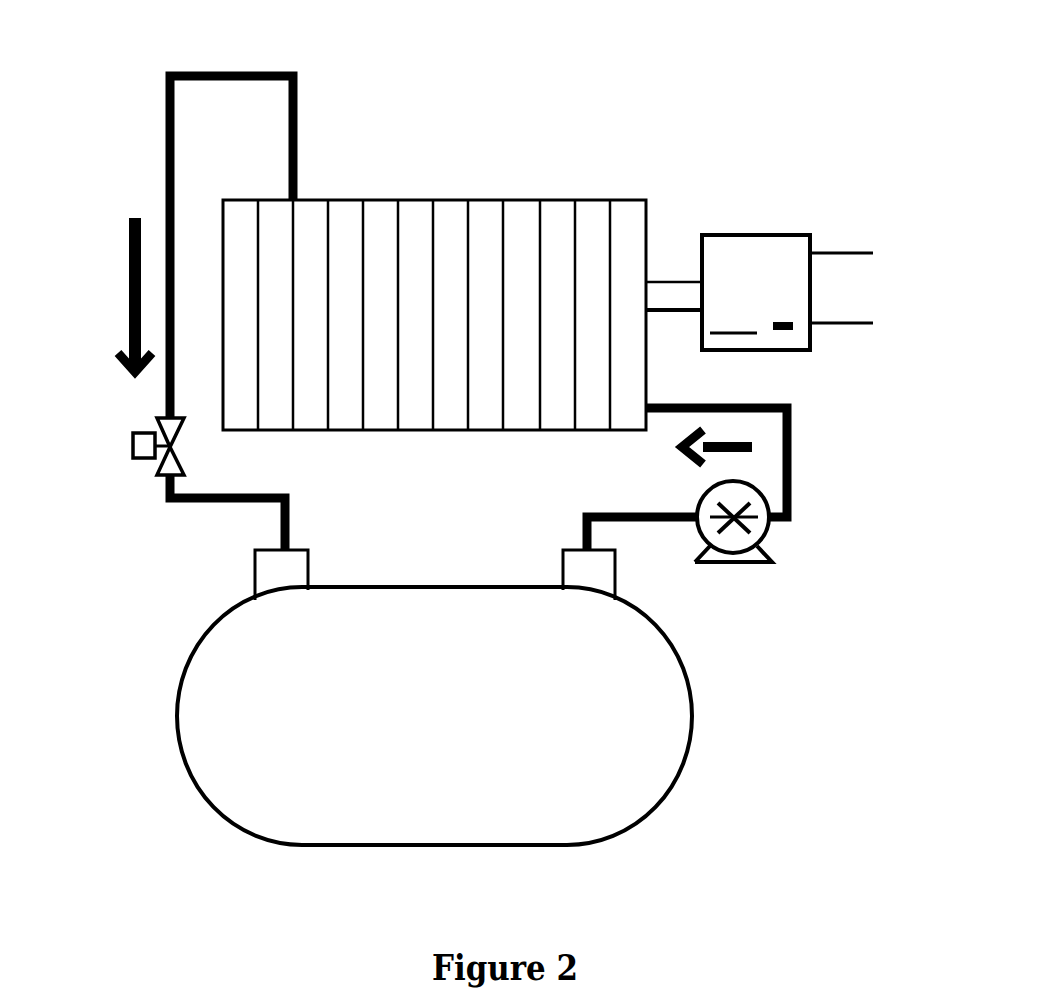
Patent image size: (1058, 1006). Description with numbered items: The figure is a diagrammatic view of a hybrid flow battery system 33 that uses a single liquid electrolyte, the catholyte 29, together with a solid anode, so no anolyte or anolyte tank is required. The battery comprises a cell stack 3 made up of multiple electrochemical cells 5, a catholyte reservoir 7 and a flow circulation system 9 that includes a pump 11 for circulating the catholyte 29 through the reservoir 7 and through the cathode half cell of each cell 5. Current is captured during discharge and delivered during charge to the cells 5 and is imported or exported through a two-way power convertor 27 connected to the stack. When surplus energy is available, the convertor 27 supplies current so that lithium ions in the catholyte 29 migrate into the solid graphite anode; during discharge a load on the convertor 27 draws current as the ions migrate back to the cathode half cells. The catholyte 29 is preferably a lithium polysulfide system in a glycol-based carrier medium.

The cell stack 3 is at (434, 267).
The electrochemical cells 5 is at (375, 205).
The catholyte reservoir 7 is at (416, 702).
The flow circulation system 9 is at (792, 440).
The pump 11 is at (742, 521).
The two-way power convertor 27 is at (740, 272).
The catholyte 29 is at (572, 762).
The hybrid flow battery system 33 is at (157, 103).